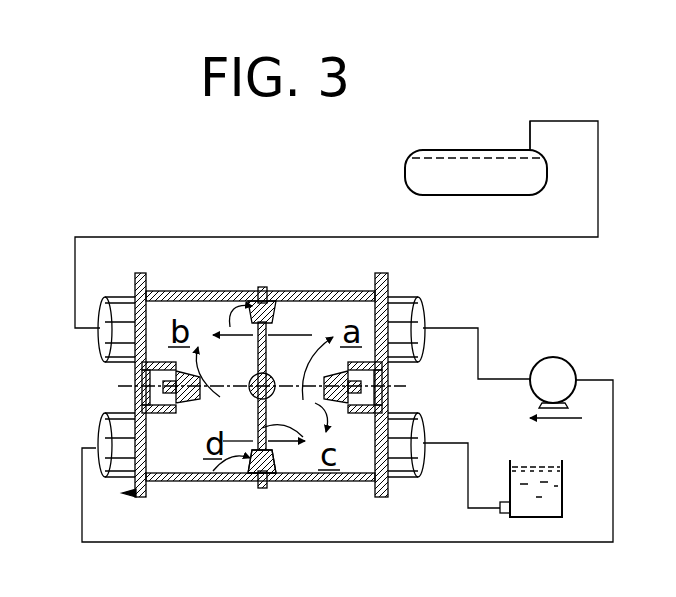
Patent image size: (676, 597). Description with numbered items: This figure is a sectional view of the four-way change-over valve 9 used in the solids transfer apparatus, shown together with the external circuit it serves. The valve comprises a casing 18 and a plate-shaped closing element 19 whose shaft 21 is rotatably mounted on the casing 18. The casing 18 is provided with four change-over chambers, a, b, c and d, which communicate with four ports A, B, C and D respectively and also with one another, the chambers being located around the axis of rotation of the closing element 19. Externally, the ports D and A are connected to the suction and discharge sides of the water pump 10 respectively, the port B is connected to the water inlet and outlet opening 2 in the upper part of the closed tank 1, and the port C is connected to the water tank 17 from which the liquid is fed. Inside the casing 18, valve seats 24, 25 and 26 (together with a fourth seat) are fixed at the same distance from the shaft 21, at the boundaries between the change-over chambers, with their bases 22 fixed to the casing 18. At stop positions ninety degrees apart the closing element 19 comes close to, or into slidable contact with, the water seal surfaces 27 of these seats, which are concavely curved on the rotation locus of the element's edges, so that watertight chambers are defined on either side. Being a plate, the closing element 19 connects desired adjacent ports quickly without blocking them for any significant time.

The closed tank 1 is at (448, 168).
The water inlet and outlet opening 2 is at (528, 152).
The four-way change-over valve 9 is at (255, 391).
The water pump 10 is at (552, 378).
The water tank 17 is at (555, 501).
The casing 18 is at (150, 291).
The closing element 19 is at (303, 443).
The shaft 21 is at (268, 382).
The bases of the valve seats 22 is at (262, 290).
The valve seat 24 is at (240, 471).
The valve seat 25 is at (172, 381).
The valve seat 26 is at (270, 298).
The water seal surfaces 27 is at (238, 303).
The port A is at (425, 330).
The port B is at (98, 330).
The port C is at (425, 446).
The port D is at (100, 446).